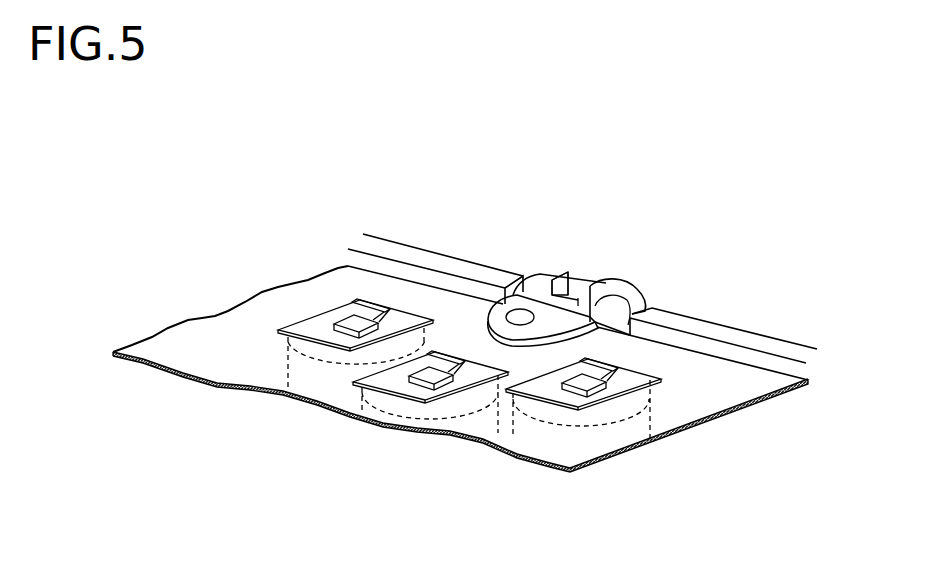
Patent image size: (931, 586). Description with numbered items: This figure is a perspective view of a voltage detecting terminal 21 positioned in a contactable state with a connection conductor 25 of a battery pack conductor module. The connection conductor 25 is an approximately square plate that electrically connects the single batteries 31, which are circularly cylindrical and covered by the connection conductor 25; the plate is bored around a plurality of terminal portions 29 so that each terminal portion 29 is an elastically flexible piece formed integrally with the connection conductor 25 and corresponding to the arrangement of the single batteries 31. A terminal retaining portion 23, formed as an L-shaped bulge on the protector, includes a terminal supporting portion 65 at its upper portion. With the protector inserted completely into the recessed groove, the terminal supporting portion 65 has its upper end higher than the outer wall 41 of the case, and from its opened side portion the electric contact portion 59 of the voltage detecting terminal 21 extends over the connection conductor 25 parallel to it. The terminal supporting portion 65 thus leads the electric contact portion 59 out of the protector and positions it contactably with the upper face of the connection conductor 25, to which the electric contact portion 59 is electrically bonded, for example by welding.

The voltage detecting terminal 21 is at (563, 303).
The terminal retaining portion 23 is at (629, 283).
The connection conductor 25 is at (733, 379).
The terminal portion 29 is at (353, 323).
The single battery 31 is at (650, 410).
The outer wall 41 is at (713, 330).
The electric contact portion 59 is at (513, 302).
The terminal supporting portion 65 is at (557, 273).